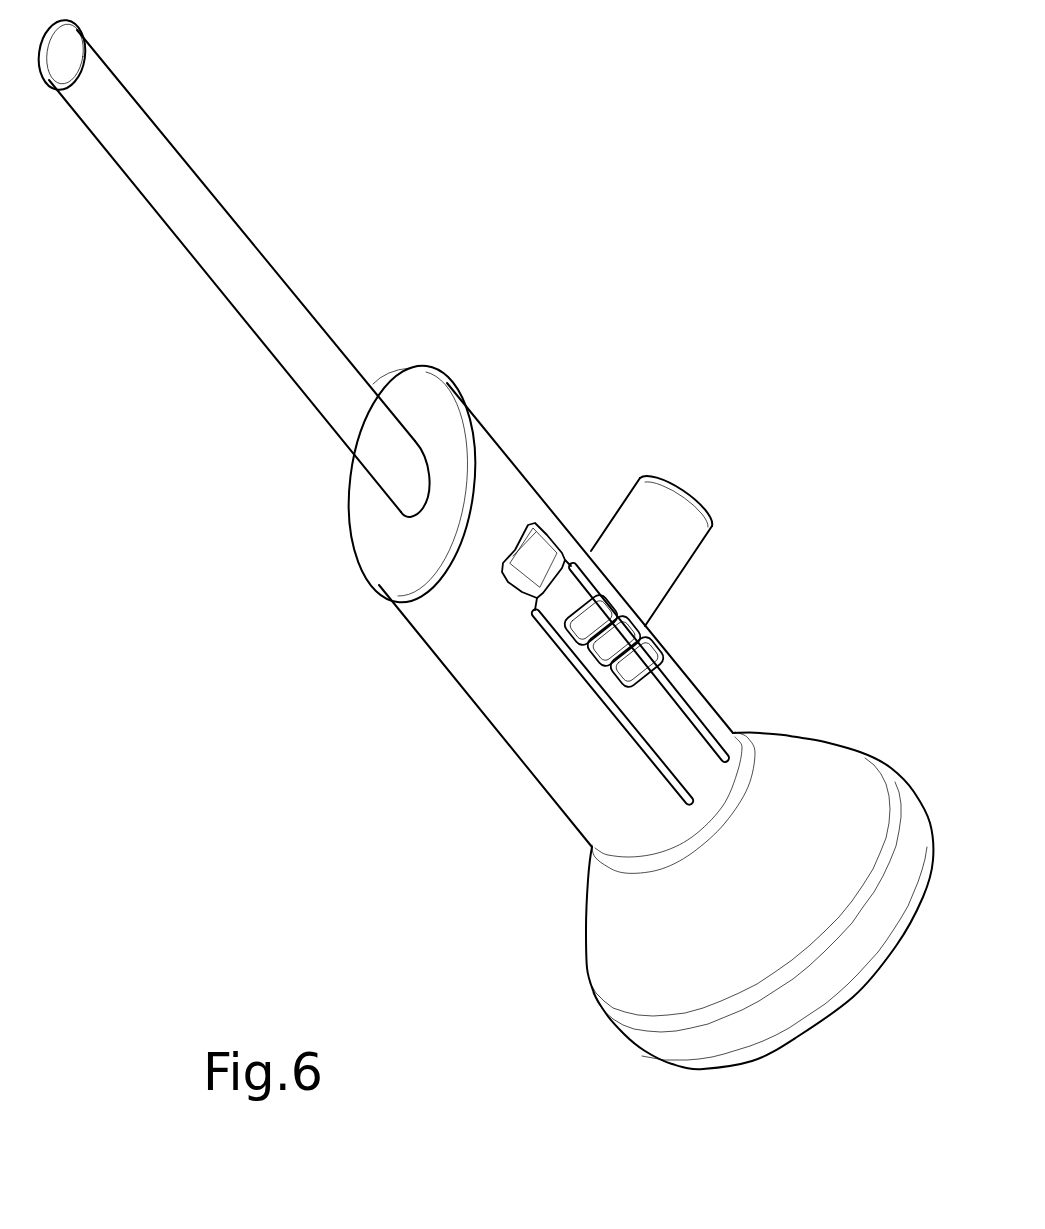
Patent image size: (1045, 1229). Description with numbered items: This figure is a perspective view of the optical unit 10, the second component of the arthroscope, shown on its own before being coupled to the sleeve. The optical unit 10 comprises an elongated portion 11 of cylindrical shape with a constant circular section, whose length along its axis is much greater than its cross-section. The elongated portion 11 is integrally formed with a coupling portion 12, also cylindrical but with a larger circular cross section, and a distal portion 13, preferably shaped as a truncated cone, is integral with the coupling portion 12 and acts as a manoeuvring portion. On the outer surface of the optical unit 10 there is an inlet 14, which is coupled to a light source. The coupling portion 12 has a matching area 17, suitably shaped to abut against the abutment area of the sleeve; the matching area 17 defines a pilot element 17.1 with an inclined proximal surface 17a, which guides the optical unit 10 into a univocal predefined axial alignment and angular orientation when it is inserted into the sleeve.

The optical unit 10 is at (563, 222).
The elongated portion 11 is at (167, 177).
The coupling portion 12 is at (500, 482).
The distal portion 13 is at (827, 787).
The inlet 14 is at (667, 522).
The matching area 17 is at (408, 555).
The proximal surface 17a is at (417, 396).
The pilot element 17.1 is at (372, 513).